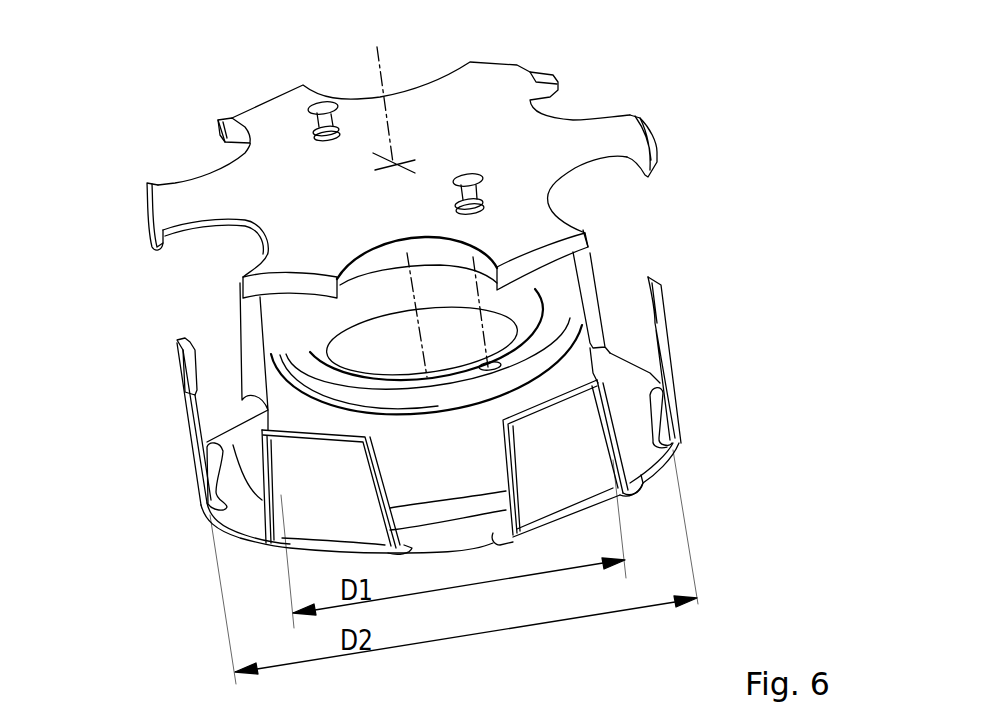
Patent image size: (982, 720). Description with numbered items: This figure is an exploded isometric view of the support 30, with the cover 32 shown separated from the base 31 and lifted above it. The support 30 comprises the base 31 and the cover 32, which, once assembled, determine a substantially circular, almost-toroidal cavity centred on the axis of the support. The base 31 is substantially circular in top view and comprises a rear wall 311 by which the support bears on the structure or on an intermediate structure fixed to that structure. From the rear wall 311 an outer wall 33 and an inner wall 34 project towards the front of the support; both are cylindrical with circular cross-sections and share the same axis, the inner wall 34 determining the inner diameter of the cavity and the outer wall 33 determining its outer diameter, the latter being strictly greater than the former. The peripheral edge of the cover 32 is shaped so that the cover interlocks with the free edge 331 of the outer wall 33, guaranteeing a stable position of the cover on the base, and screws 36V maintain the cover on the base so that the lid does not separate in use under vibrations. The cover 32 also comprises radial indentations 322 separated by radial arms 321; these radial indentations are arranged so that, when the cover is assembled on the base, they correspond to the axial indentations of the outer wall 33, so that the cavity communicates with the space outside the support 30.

The support 30 is at (768, 94).
The base 31 is at (698, 456).
The rear wall 311 is at (250, 500).
The outer wall 33 is at (553, 470).
The free edge 331 is at (182, 362).
The cover 32 is at (536, 52).
The radial arms 321 is at (197, 198).
The radial indentations 322 is at (573, 102).
The inner wall 34 is at (434, 472).
The screws 36V is at (317, 107).